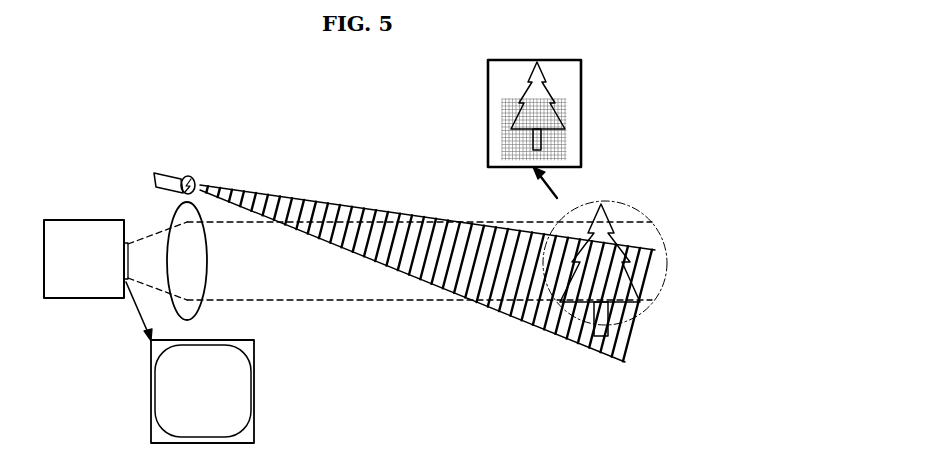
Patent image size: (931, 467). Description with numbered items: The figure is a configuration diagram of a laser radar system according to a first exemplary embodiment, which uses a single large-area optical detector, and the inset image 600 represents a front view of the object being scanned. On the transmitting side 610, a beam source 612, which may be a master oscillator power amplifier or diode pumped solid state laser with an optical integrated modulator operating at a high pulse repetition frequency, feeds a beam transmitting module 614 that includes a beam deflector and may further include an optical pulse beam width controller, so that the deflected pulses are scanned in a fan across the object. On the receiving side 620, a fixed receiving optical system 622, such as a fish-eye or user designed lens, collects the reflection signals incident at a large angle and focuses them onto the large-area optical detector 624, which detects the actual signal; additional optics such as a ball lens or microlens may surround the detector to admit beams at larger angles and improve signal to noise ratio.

The front view of an object 600 is at (486, 118).
The beam transmitting unit 610 is at (183, 148).
The beam source 612 is at (176, 168).
The beam transmitting module 614 is at (200, 175).
The receiving unit 620 is at (312, 322).
The receiving optical system 622 is at (203, 272).
The large-area optical detector 624 is at (254, 386).